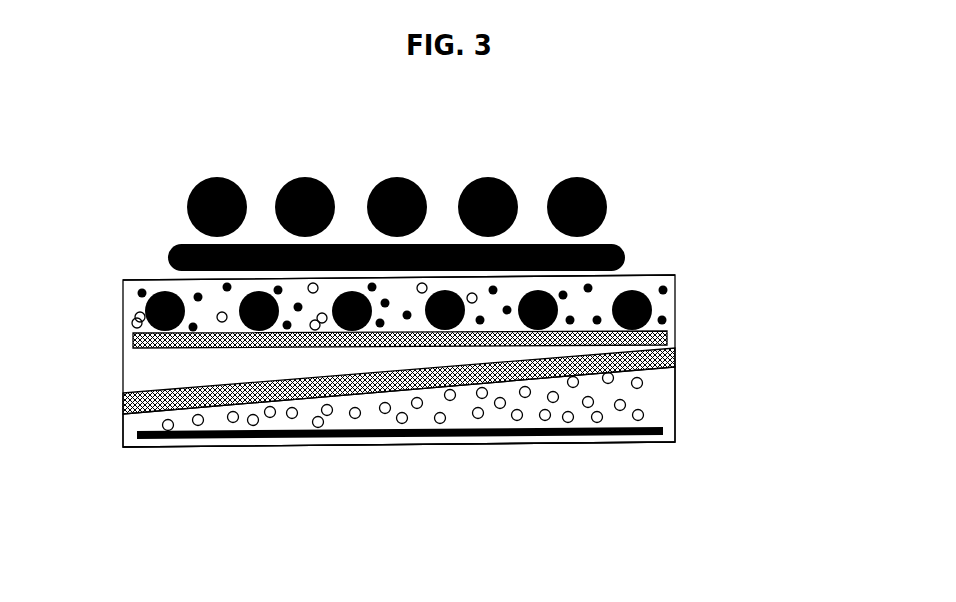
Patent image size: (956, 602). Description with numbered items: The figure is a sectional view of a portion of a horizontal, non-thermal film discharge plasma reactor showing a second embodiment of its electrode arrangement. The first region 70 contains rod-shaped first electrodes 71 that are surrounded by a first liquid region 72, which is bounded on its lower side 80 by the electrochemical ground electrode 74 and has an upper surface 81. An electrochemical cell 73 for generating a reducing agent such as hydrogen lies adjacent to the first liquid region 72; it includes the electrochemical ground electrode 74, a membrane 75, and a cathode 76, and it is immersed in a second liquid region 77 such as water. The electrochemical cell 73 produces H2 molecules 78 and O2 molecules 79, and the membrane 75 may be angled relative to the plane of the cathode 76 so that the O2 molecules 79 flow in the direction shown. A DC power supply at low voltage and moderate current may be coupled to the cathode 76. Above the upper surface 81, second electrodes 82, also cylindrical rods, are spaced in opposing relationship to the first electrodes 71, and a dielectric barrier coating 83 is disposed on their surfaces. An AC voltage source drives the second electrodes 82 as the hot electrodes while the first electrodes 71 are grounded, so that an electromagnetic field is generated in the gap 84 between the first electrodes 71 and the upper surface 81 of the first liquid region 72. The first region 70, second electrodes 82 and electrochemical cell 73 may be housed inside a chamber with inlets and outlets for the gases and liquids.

The first region 70 is at (426, 357).
The first electrodes 71 is at (648, 293).
The first liquid region 72 is at (610, 287).
The electrochemical cell 73 is at (482, 416).
The electrochemical ground electrode 74 is at (663, 333).
The membrane 75 is at (657, 362).
The cathode 76 is at (660, 438).
The second liquid region 77 is at (353, 446).
The H2 molecules 78 is at (280, 333).
The O2 molecules 79 is at (477, 408).
The lower side 80 is at (138, 315).
The upper surface 81 is at (158, 280).
The second electrodes 82 is at (593, 177).
The dielectric barrier coating 83 is at (378, 178).
The gap 84 is at (628, 250).